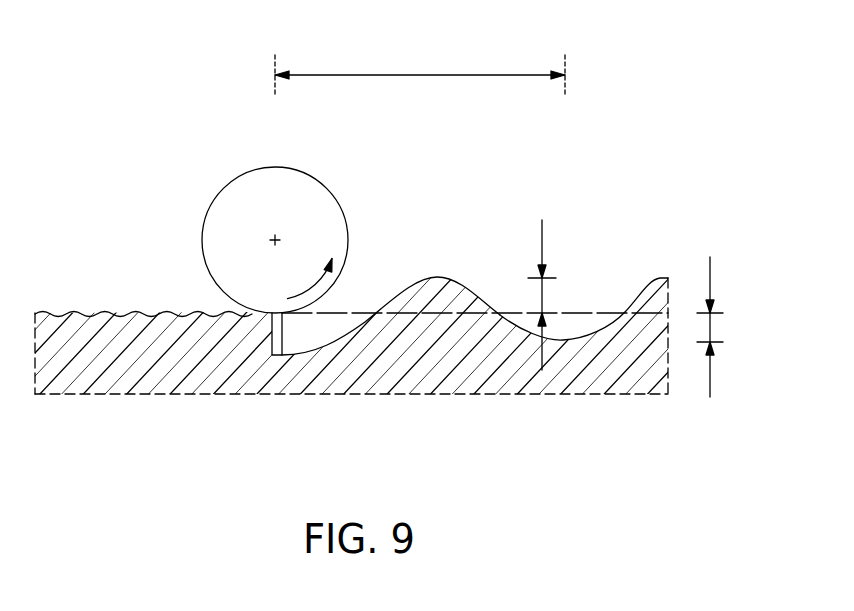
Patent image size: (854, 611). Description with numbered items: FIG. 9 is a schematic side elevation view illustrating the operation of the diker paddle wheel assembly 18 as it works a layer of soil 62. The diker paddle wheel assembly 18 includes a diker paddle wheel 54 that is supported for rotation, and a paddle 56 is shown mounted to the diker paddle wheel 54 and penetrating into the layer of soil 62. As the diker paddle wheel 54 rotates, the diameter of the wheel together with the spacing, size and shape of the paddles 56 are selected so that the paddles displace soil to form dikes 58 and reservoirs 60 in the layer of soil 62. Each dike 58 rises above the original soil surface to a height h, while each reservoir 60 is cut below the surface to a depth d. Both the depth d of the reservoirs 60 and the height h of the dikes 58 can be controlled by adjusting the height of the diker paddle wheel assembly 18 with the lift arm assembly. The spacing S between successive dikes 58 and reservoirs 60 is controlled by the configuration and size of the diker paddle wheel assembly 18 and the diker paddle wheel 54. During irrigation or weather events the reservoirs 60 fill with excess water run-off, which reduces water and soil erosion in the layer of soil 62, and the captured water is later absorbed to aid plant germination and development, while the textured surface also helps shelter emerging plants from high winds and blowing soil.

The diker paddle wheel assembly 18 is at (337, 182).
The diker paddle wheel 54 is at (328, 238).
The paddle 56 is at (287, 354).
The dike 58 is at (443, 292).
The reservoir 60 is at (590, 338).
The layer of soil 62 is at (129, 338).
The spacing S is at (420, 75).
The height of the dikes h is at (540, 295).
The depth of the reservoirs d is at (714, 328).